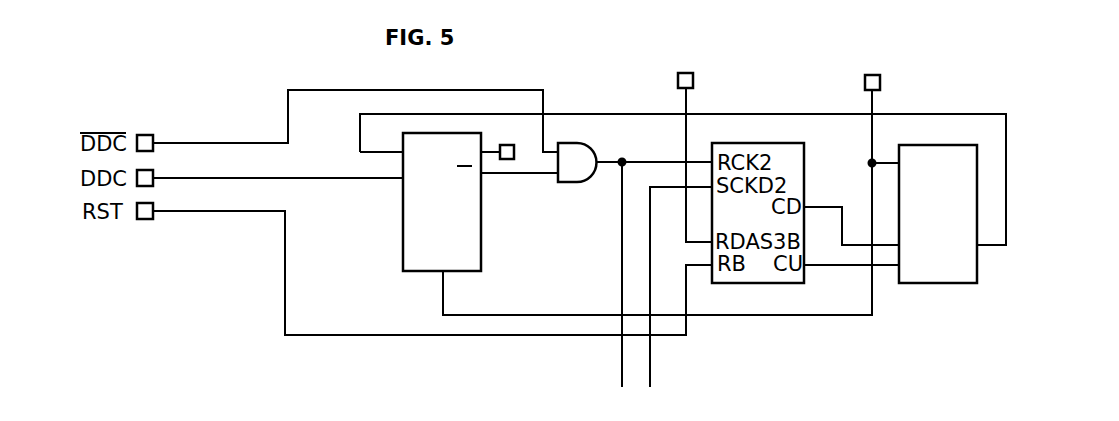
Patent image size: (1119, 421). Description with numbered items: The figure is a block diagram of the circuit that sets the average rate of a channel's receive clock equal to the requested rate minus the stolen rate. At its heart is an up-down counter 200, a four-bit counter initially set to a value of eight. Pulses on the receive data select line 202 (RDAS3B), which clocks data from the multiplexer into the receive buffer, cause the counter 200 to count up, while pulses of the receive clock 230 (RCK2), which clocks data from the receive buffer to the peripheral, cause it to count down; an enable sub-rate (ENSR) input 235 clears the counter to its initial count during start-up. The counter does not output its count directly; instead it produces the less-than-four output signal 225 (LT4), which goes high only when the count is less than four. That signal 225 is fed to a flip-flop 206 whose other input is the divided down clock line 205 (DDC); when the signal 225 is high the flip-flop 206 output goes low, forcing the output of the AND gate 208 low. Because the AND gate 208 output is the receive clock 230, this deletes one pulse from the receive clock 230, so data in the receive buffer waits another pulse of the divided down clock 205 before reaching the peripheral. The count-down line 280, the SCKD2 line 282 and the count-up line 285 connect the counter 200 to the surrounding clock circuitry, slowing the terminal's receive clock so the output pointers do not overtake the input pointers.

The up-down counter 200 is at (977, 165).
The receive data select line 202 is at (684, 96).
The divided down clock line 205 is at (218, 178).
The flip-flop 206 is at (403, 238).
The AND gate 208 is at (576, 183).
The output signal (LT4) 225 is at (981, 247).
The receive clock 230 is at (622, 231).
The enable sub-rate (ENSR) input 235 is at (875, 98).
The count-down (CD) line 280 is at (835, 196).
The SCKD2 signal line 282 is at (650, 262).
The count-up (CU) line 285 is at (851, 268).